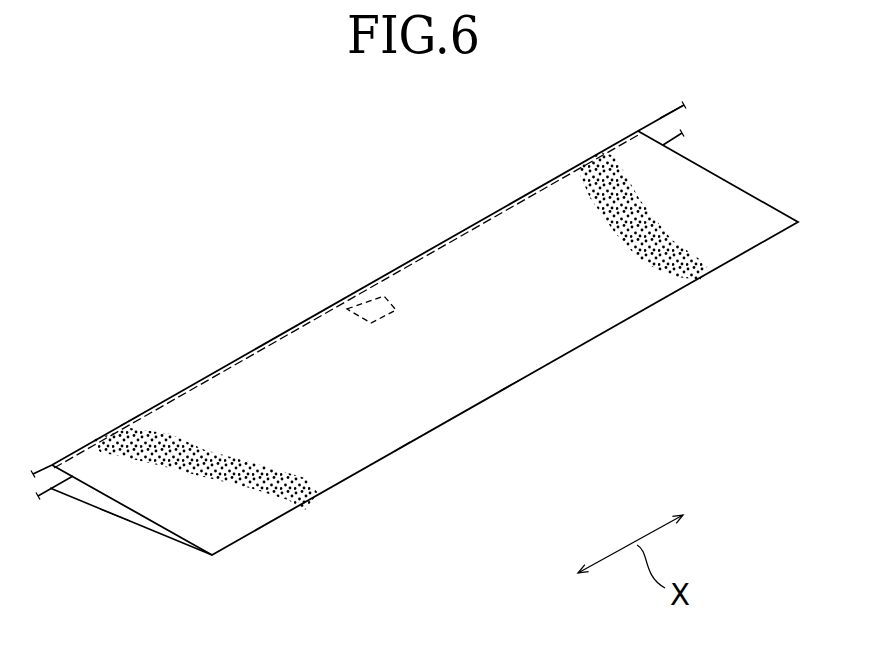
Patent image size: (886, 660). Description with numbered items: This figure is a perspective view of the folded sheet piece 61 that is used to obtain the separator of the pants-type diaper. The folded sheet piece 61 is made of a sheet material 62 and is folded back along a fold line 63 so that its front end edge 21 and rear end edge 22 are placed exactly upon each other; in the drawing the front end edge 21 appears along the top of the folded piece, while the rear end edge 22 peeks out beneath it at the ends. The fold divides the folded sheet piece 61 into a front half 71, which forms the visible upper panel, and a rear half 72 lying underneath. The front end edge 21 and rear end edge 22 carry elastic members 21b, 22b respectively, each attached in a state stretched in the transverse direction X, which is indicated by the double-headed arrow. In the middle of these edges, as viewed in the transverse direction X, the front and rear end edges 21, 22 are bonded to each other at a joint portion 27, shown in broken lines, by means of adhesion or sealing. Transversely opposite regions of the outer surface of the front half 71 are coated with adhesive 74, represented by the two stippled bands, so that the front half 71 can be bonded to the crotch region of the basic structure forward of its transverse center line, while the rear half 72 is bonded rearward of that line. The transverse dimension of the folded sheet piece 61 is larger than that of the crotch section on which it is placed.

The front end edge 21 is at (227, 376).
The elastic member 21b is at (663, 115).
The rear end edge 22 is at (78, 495).
The elastic member 22b is at (679, 138).
The joint portion 27 is at (372, 292).
The folded sheet piece 61 is at (533, 174).
The sheet material 62 is at (283, 375).
The fold line 63 is at (515, 383).
The front half 71 is at (378, 438).
The rear half 72 is at (127, 521).
The adhesive 74 is at (703, 277).